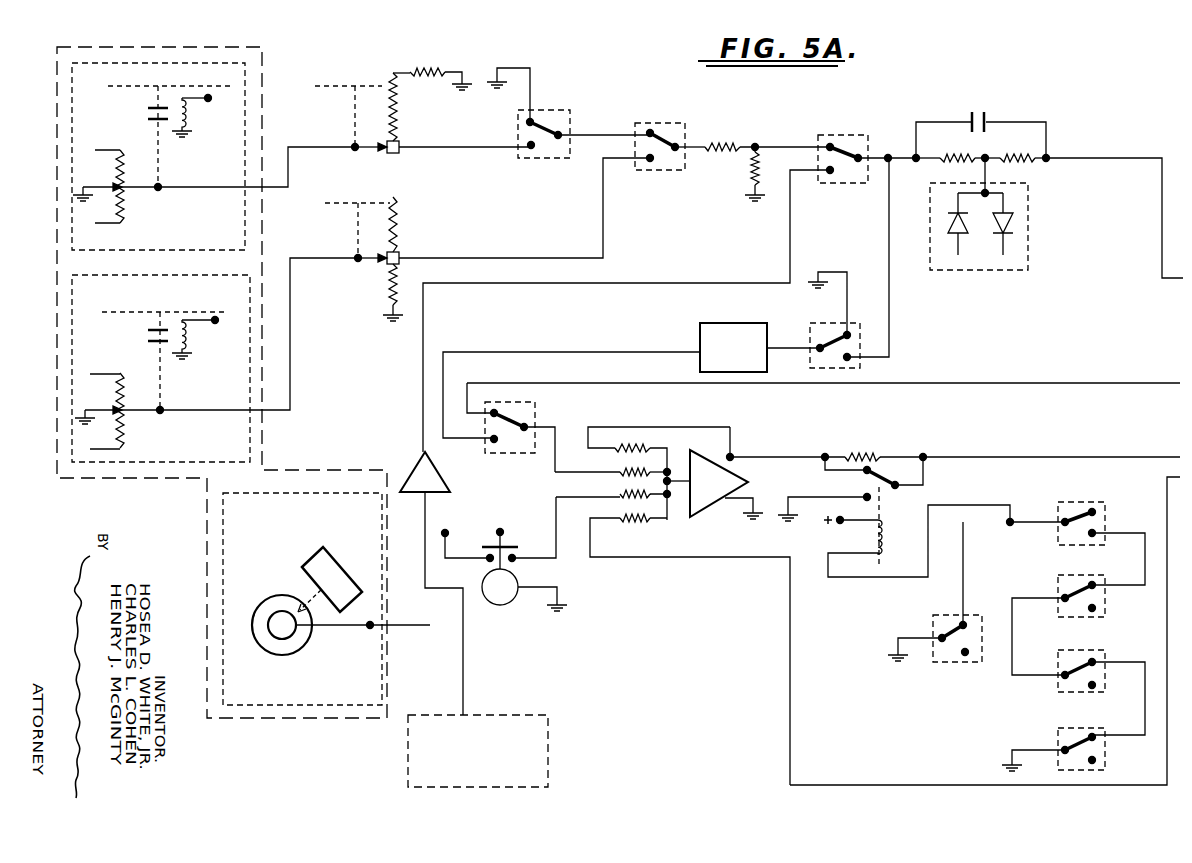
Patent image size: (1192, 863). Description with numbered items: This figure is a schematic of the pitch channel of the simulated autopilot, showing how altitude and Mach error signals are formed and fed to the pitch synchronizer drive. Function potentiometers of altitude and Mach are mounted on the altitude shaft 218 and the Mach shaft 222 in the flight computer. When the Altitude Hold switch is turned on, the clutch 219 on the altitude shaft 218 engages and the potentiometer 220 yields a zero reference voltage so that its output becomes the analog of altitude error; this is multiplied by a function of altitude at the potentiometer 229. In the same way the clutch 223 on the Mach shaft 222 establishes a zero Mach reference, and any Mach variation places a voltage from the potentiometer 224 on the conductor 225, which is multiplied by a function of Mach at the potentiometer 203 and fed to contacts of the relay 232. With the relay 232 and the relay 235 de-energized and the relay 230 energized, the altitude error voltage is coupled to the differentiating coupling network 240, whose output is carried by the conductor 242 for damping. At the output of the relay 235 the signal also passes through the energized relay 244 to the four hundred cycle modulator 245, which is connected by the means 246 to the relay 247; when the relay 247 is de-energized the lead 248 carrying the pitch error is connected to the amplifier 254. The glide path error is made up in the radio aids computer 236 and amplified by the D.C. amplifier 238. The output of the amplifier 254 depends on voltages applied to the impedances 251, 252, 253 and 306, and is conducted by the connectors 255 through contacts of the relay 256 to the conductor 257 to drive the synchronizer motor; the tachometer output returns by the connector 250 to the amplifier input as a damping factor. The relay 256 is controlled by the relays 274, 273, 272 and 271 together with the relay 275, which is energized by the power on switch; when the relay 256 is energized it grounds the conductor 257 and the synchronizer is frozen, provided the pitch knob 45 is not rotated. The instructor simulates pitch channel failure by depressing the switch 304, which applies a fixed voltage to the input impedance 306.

The altitude shaft 218 is at (128, 90).
The clutch 219 is at (190, 115).
The potentiometer 220 is at (128, 205).
The Mach shaft 222 is at (134, 308).
The clutch 223 is at (190, 345).
The potentiometer 224 is at (128, 430).
The conductor 225 is at (291, 352).
The potentiometer 229 is at (398, 122).
The potentiometer 203 is at (400, 222).
The relay 230 is at (572, 119).
The relay 232 is at (665, 122).
The relay 235 is at (838, 133).
The coupling network 240 is at (1040, 118).
The conductor 242 is at (1090, 158).
The relay 244 is at (862, 368).
The 400 cycle modulator 245 is at (752, 358).
The connecting means 246 is at (530, 352).
The relay 247 is at (525, 452).
The lead 248 is at (1088, 383).
The D.C. amplifier 238 is at (431, 583).
The radio aids computer 236 is at (490, 748).
The pitch knob 45 is at (336, 549).
The switch 304 is at (500, 530).
The impedance 251 is at (642, 448).
The impedance 252 is at (620, 472).
The input impedance 306 is at (620, 494).
The impedance 253 is at (646, 525).
The amplifier 254 is at (714, 484).
The connectors 255 is at (735, 456).
The relay 256 is at (884, 540).
The conductor 257 is at (1096, 457).
The connector 250 is at (985, 631).
The relay 274 is at (1064, 507).
The relay 273 is at (1058, 580).
The relay 272 is at (1063, 658).
The relay 271 is at (1056, 728).
The relay 275 is at (968, 668).